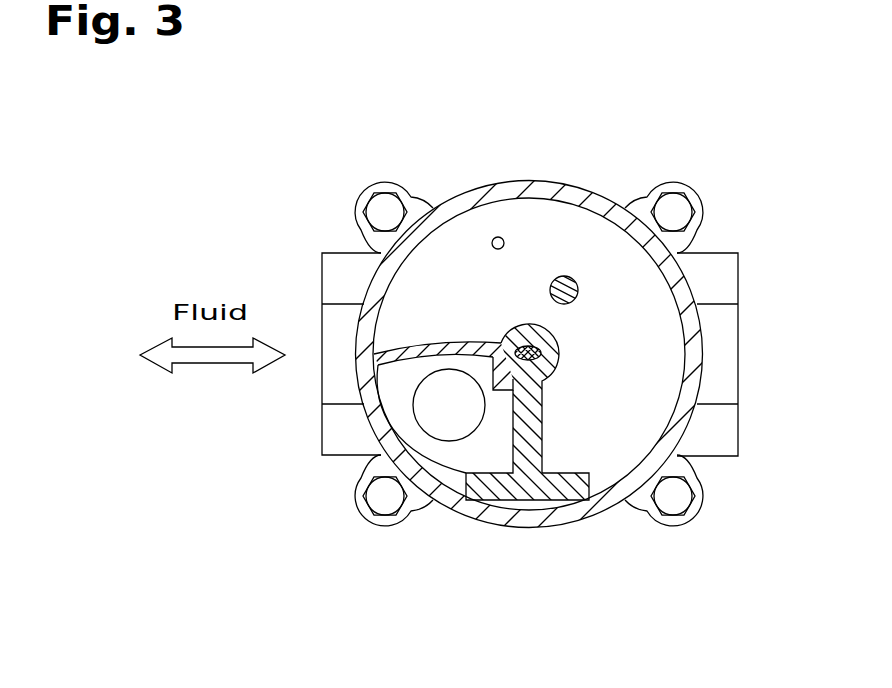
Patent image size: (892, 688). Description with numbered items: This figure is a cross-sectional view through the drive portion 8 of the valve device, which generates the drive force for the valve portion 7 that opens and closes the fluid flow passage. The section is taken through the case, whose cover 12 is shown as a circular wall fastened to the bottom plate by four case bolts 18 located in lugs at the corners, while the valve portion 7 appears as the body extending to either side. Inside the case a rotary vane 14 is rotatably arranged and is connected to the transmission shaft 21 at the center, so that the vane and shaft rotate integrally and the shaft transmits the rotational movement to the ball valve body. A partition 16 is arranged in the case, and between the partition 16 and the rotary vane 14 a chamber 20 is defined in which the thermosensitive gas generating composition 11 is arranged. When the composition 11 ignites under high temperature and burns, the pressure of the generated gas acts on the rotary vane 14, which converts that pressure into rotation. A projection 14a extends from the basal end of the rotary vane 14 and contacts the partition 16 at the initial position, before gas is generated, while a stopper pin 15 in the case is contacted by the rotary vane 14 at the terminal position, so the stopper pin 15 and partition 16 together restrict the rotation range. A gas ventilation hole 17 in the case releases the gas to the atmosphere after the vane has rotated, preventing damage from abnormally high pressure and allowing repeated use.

The valve portion 7 is at (742, 272).
The drive portion 8 is at (600, 470).
The thermosensitive gas generating composition 11 is at (447, 441).
The cover 12 is at (468, 192).
The rotary vane 14 is at (447, 340).
The projection 14a is at (502, 392).
The stopper pin 15 is at (566, 276).
The partition 16 is at (523, 510).
The gas ventilation hole 17 is at (505, 243).
The case bolts 18 is at (390, 200).
The chamber 20 is at (390, 398).
The transmission shaft 21 is at (523, 342).